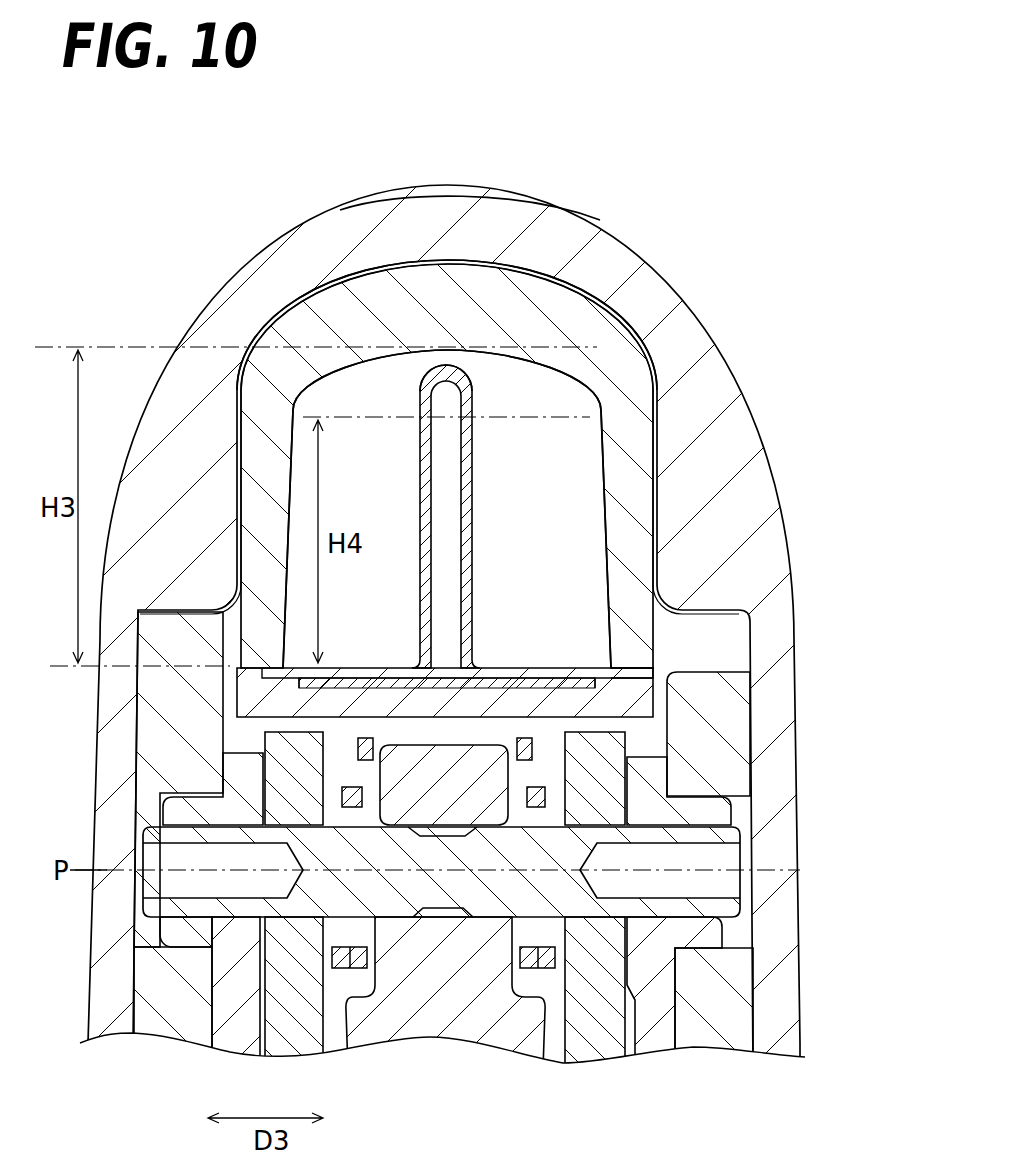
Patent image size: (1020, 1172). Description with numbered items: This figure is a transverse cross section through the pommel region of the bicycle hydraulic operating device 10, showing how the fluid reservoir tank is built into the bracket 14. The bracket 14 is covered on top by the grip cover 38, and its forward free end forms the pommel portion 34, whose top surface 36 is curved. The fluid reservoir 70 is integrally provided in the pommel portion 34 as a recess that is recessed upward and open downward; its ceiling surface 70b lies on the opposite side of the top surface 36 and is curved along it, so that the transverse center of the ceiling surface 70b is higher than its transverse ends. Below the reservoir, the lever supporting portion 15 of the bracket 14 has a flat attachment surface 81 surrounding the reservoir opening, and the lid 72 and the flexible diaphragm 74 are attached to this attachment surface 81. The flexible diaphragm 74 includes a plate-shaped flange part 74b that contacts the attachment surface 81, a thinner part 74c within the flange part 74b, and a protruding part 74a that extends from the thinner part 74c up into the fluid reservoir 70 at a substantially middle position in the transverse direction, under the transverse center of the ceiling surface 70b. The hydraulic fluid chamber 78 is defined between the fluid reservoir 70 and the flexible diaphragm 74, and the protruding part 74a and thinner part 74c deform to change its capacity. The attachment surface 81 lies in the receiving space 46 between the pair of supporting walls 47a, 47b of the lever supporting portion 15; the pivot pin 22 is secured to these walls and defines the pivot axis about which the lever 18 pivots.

The bicycle hydraulic operating device 10 is at (206, 213).
The bracket 14 is at (220, 321).
The lever supporting portion 15 is at (163, 1056).
The lever 18 is at (638, 1074).
The pivot pin 22 is at (475, 893).
The pommel portion 34 is at (668, 376).
The top surface 36 is at (582, 297).
The grip cover 38 is at (672, 297).
The receiving space 46 is at (238, 754).
The supporting wall 47a is at (160, 750).
The supporting wall 47b is at (737, 732).
The fluid reservoir 70 is at (350, 376).
The ceiling surface 70b is at (518, 358).
The lid 72 is at (373, 670).
The flexible diaphragm 74 is at (423, 356).
The protruding part 74a is at (443, 377).
The flange part 74b is at (632, 677).
The thinner part 74c is at (517, 673).
The hydraulic fluid chamber 78 is at (550, 523).
The attachment surface 81 is at (233, 707).